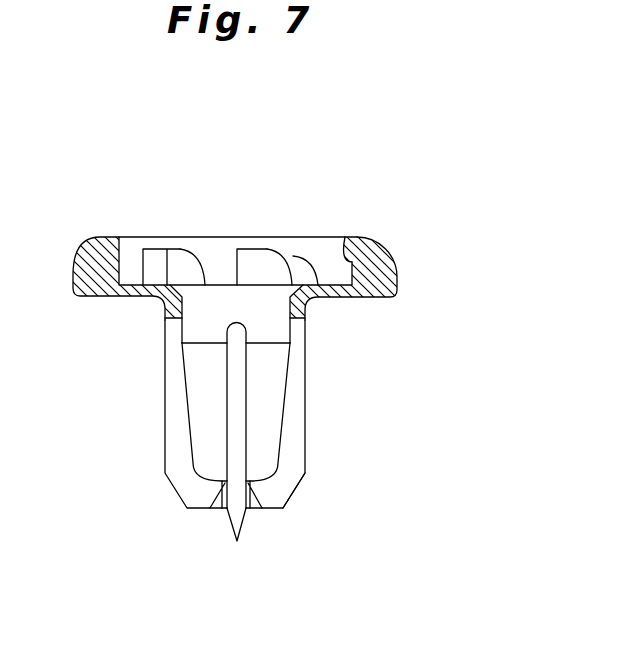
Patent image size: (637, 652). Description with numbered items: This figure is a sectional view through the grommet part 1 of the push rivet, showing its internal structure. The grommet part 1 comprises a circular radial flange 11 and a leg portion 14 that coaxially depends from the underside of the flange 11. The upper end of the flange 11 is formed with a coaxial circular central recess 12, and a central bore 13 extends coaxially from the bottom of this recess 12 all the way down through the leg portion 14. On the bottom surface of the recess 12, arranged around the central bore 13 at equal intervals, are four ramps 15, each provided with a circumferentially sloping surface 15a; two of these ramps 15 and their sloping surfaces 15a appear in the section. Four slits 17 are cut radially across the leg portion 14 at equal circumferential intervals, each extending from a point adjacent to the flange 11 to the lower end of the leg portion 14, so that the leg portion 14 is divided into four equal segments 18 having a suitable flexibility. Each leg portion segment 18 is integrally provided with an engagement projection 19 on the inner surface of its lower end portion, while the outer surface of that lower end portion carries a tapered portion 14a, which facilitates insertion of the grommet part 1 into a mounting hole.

The grommet part 1 is at (402, 230).
The circular radial flange 11 is at (393, 283).
The circular central recess 12 is at (343, 248).
The central bore 13 is at (192, 430).
The leg portion 14 is at (308, 351).
The tapered portion 14a is at (292, 497).
The ramps 15 is at (144, 248).
The circumferentially sloping surface 15a is at (195, 256).
The slits 17 is at (247, 445).
The leg portion segments 18 is at (167, 361).
The engagement projection 19 is at (237, 541).